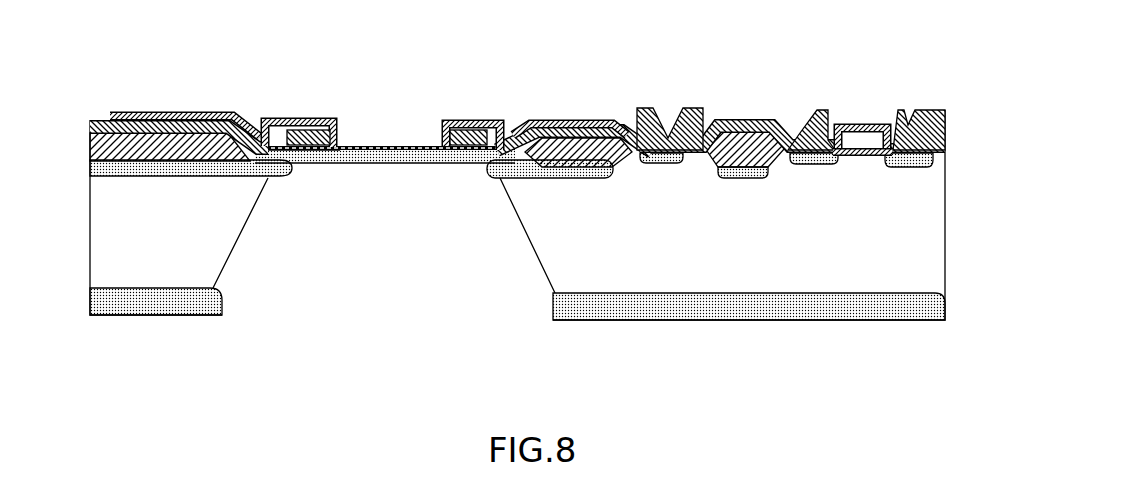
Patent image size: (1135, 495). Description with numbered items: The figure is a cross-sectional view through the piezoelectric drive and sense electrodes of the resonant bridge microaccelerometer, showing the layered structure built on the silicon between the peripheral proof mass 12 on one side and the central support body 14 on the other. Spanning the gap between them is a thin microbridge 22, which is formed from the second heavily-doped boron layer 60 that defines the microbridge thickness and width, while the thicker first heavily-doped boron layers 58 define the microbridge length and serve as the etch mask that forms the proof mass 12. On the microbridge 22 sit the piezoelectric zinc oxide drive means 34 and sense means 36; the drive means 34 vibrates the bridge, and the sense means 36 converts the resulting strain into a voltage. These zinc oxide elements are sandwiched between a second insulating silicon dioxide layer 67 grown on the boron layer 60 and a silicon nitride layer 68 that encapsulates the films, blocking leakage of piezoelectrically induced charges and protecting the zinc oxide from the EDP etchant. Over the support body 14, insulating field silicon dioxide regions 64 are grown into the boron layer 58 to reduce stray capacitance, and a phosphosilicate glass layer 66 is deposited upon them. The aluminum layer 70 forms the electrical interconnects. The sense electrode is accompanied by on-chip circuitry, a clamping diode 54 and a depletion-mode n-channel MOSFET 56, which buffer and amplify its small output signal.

The peripheral proof mass 12 is at (220, 235).
The central support body 14 is at (908, 273).
The microbridge 22 is at (377, 172).
The drive means 34 is at (313, 152).
The sense means 36 is at (450, 155).
The clamping diode 54 is at (670, 160).
The depletion-mode n-channel MOSFET 56 is at (866, 168).
The first heavily-doped boron layer 58 is at (177, 293).
The second heavily-doped boron layer 60 is at (463, 155).
The field silicon dioxide region 64 is at (113, 142).
The phosphosilicate glass layer 66 is at (142, 118).
The second insulating silicon dioxide layer 67 is at (397, 147).
The silicon nitride layer 68 is at (343, 125).
The aluminum layer 70 is at (177, 113).